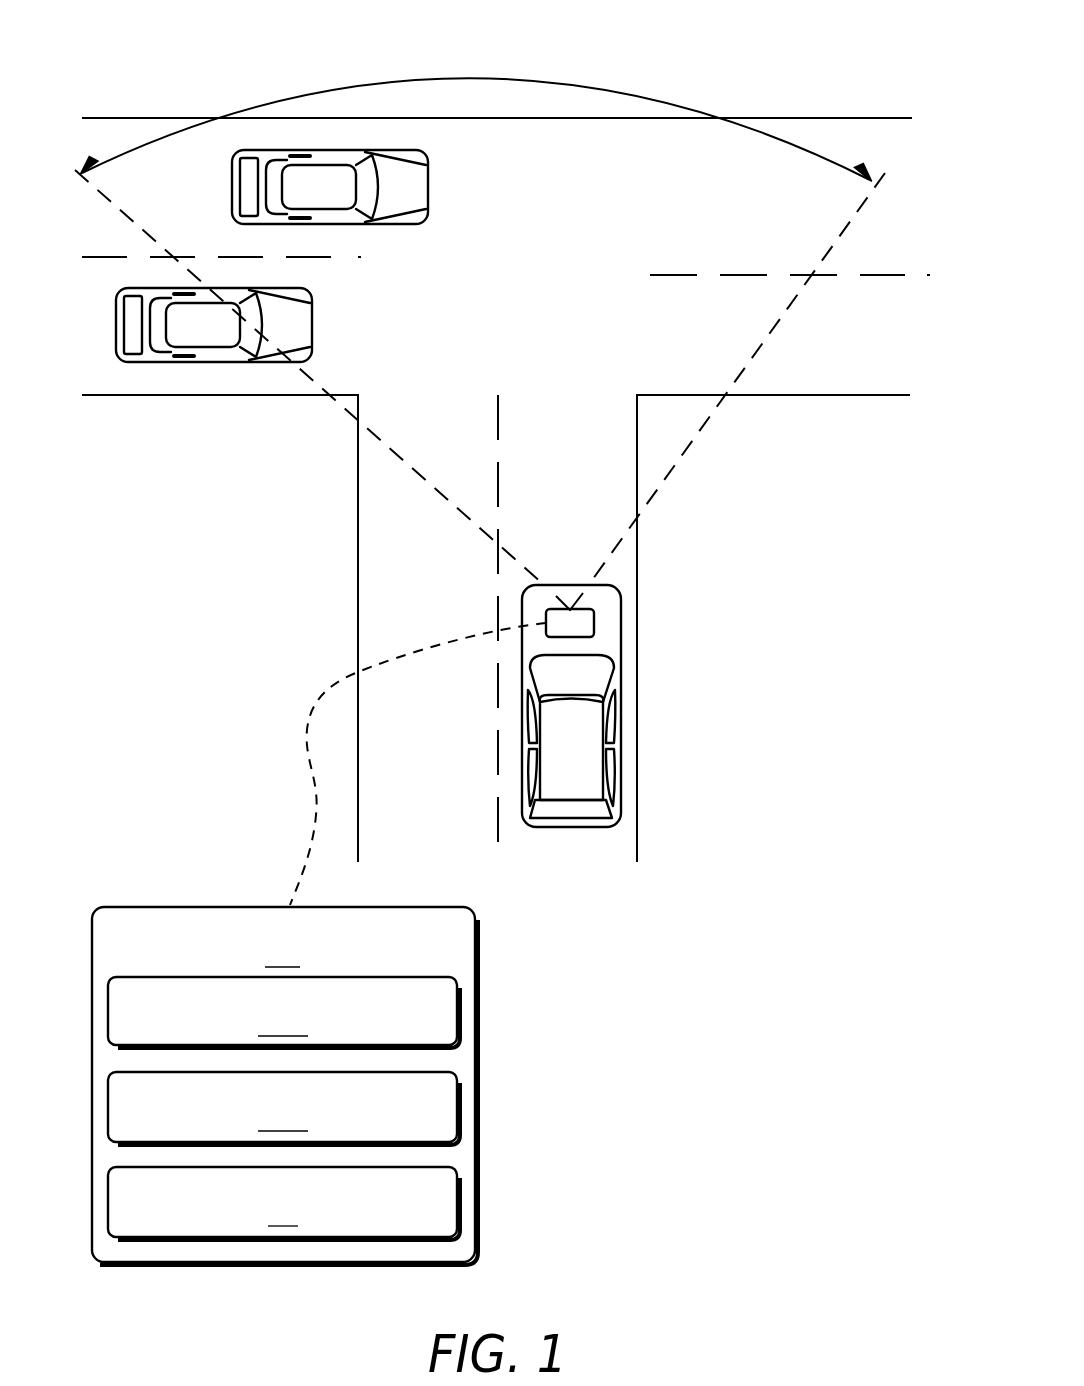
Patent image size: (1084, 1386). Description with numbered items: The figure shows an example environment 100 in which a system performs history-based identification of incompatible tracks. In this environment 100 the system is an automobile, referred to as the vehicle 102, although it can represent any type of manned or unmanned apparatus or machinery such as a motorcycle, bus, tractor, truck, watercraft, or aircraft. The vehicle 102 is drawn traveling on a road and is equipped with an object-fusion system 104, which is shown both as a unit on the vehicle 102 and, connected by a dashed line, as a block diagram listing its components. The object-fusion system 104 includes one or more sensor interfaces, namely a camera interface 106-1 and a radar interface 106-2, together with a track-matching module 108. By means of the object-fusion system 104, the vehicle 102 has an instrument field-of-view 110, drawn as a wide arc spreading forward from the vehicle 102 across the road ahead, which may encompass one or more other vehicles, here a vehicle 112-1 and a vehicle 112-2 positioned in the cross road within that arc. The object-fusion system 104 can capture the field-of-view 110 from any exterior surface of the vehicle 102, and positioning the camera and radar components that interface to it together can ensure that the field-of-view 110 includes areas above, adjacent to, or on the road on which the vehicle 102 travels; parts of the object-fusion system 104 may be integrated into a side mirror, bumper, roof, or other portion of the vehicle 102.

The environment 100 is at (156, 30).
The vehicle 102 is at (570, 828).
The object-fusion system 104 is at (406, 923).
The camera interface 106-1 is at (284, 1012).
The radar interface 106-2 is at (284, 1108).
The track-matching module 108 is at (284, 1203).
The instrument field-of-view 110 is at (670, 102).
The vehicle 112-1 is at (315, 323).
The vehicle 112-2 is at (430, 187).